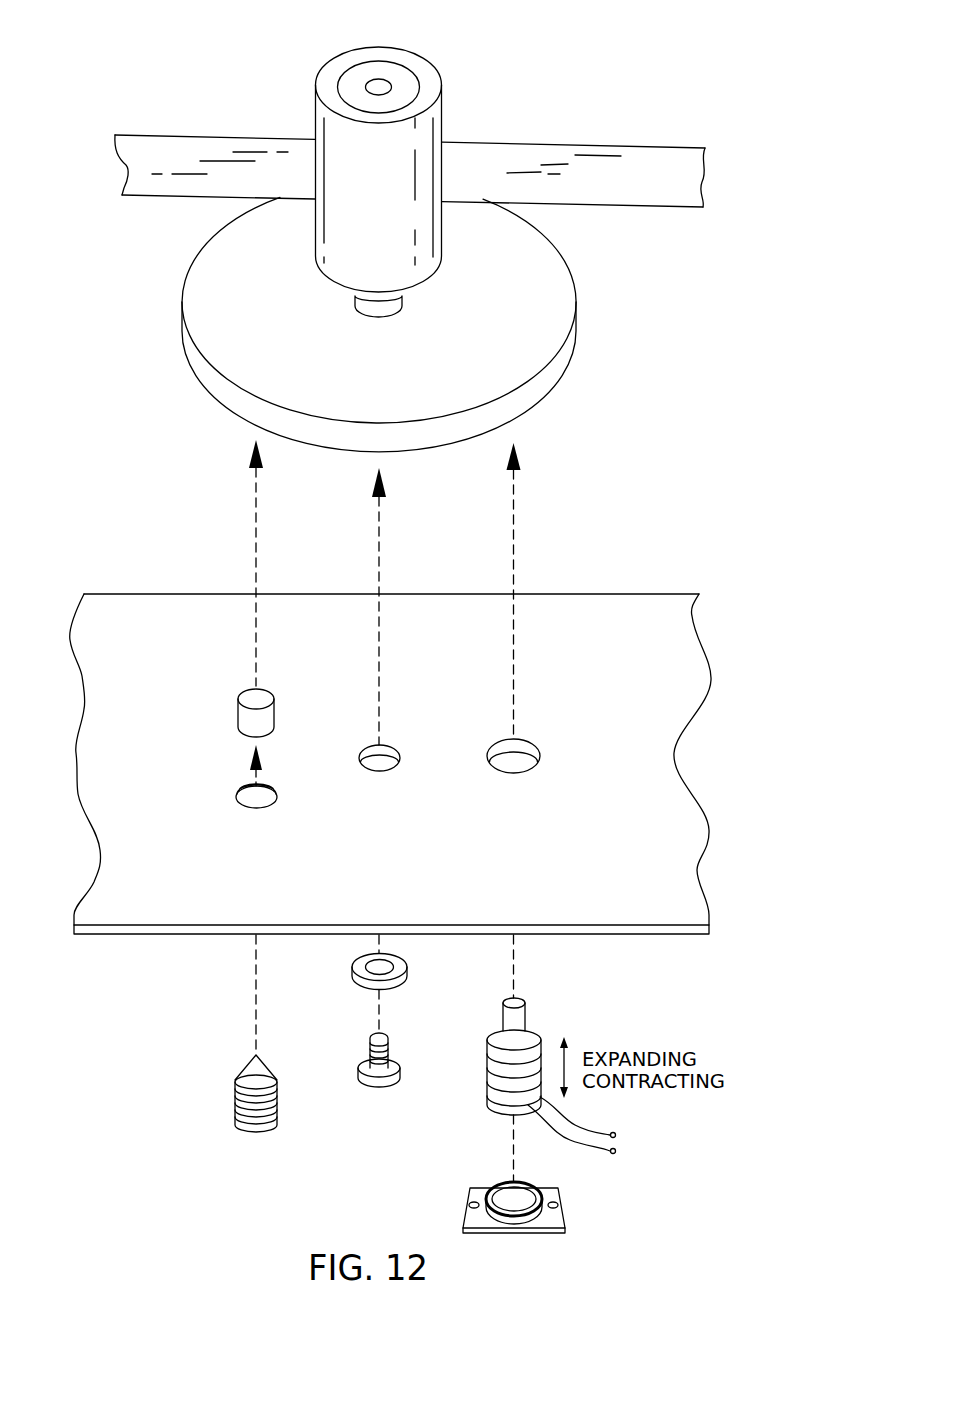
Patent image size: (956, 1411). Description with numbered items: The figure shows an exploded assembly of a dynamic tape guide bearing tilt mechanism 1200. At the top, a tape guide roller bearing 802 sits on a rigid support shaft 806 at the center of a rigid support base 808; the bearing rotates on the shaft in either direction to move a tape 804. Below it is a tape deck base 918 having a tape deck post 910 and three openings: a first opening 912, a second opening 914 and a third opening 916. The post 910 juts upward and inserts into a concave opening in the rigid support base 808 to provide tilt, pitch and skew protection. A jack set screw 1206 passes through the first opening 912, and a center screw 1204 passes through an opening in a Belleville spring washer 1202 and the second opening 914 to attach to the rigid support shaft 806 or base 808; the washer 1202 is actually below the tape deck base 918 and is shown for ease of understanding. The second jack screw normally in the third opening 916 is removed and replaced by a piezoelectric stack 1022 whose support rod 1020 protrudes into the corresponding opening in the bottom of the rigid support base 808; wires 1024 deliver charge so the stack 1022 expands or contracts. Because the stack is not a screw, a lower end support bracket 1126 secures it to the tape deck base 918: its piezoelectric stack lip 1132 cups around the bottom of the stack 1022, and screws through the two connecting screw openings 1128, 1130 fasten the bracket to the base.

The assembly of a dynamic tape guide bearing tilt mechanism 1200 is at (150, 40).
The tape guide roller bearing 802 is at (444, 116).
The tape 804 is at (574, 140).
The rigid support shaft 806 is at (402, 297).
The rigid support base 808 is at (576, 318).
The tape deck post 910 is at (238, 706).
The first opening 912 is at (256, 809).
The second opening 914 is at (382, 772).
The third opening 916 is at (518, 775).
The tape deck base 918 is at (552, 594).
The support rod 1020 is at (525, 1017).
The piezoelectric stack 1022 is at (487, 1068).
The wires 1024 is at (616, 1137).
The lower end support bracket 1126 is at (602, 1237).
The connecting screw opening 1128 is at (469, 1203).
The connecting screw opening 1130 is at (557, 1203).
The piezoelectric stack lip 1132 is at (494, 1183).
The Belleville spring washer 1202 is at (408, 963).
The center screw 1204 is at (400, 1066).
The jack set screw 1206 is at (248, 1066).